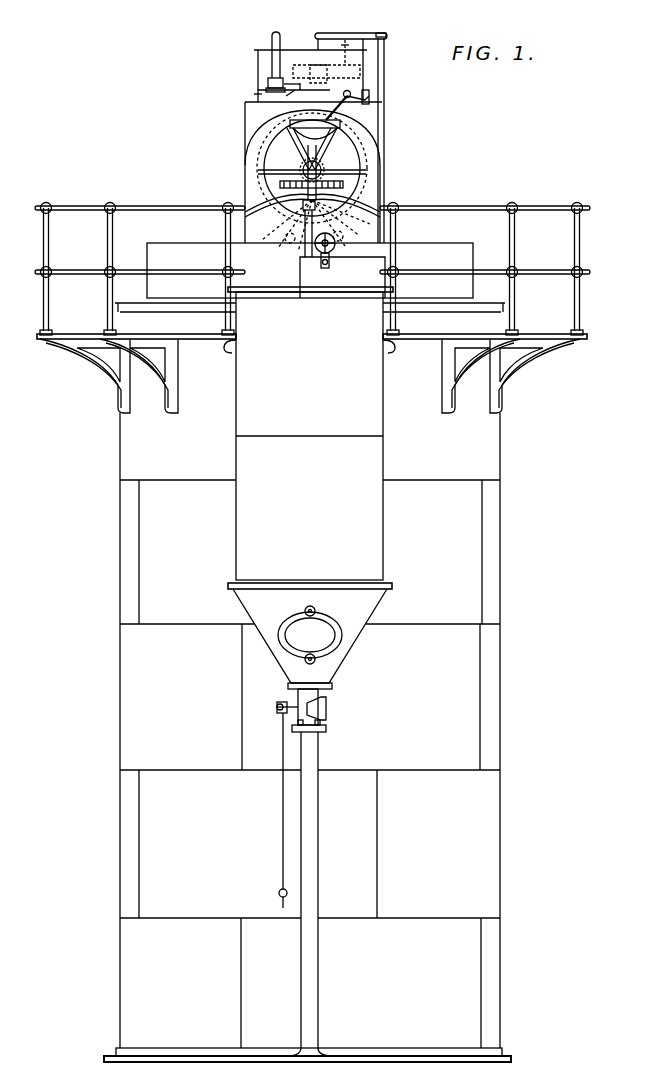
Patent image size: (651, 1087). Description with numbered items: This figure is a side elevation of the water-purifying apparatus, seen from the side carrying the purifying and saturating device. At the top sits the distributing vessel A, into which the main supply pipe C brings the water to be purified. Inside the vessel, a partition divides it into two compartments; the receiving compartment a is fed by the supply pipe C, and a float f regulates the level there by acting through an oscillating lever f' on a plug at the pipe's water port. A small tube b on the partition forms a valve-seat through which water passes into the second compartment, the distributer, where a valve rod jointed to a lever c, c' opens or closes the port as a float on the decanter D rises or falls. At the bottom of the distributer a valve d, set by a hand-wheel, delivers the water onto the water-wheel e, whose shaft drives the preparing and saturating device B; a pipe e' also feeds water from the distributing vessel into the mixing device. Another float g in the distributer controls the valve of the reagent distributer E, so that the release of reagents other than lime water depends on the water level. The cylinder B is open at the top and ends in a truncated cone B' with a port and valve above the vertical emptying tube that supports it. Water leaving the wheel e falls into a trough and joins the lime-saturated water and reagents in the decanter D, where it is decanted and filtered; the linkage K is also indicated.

The distributing vessel A is at (249, 82).
The compartment a is at (288, 92).
The small tube b is at (299, 94).
The float f is at (294, 83).
The oscillating lever f' is at (282, 105).
The main supply pipe C is at (310, 56).
The lever c is at (351, 35).
The lever arm c' is at (378, 21).
The float g is at (362, 70).
The water-wheel e is at (330, 172).
The pipe e' is at (373, 91).
The valve d is at (370, 97).
The link K is at (290, 226).
The reagent distributer E is at (310, 270).
The preparator-saturator of reagent B is at (310, 438).
The truncated cone bottom B' is at (310, 639).
The decanter D is at (301, 737).